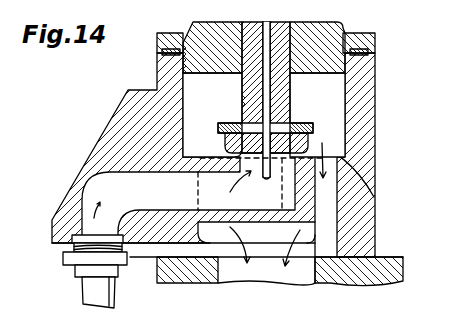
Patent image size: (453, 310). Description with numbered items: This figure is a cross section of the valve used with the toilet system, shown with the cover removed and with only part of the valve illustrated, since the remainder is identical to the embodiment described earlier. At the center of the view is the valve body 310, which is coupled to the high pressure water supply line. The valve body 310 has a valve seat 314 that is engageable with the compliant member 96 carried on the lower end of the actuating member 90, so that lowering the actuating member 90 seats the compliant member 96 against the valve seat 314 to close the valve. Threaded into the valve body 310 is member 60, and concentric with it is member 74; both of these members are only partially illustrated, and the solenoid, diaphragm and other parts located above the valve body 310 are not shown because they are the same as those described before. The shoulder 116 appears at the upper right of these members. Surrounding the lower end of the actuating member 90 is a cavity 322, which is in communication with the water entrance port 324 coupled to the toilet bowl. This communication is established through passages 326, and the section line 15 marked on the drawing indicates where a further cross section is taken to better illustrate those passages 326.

The section line 15 is at (45, 134).
The member 60 is at (162, 54).
The member 74 is at (190, 34).
The actuating member 90 is at (250, 82).
The compliant member 96 is at (235, 141).
The cap shoulder 116 is at (339, 28).
The valve body 310 is at (112, 142).
The valve seat 314 is at (368, 194).
The cavity 322 is at (340, 109).
The water entrance port 324 is at (262, 277).
The passages 326 is at (347, 241).